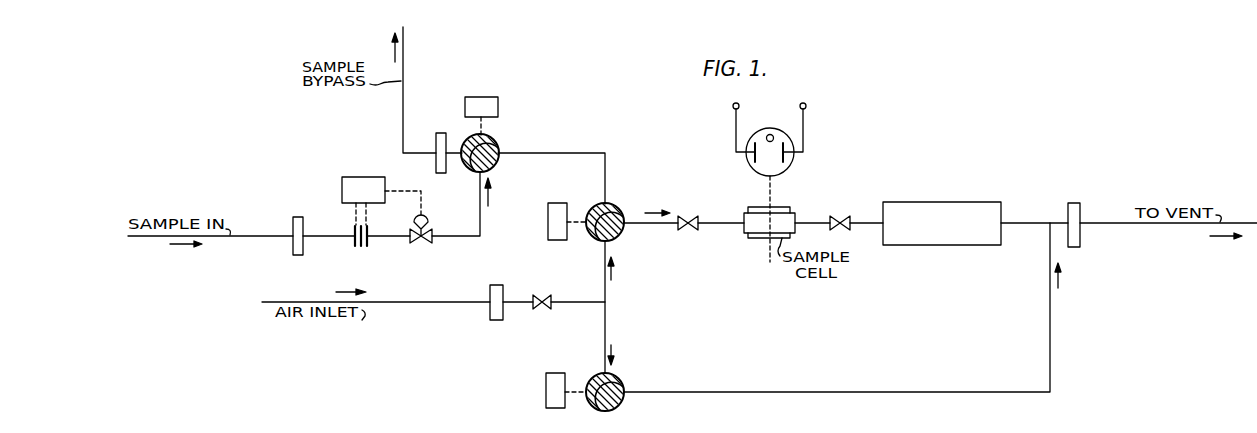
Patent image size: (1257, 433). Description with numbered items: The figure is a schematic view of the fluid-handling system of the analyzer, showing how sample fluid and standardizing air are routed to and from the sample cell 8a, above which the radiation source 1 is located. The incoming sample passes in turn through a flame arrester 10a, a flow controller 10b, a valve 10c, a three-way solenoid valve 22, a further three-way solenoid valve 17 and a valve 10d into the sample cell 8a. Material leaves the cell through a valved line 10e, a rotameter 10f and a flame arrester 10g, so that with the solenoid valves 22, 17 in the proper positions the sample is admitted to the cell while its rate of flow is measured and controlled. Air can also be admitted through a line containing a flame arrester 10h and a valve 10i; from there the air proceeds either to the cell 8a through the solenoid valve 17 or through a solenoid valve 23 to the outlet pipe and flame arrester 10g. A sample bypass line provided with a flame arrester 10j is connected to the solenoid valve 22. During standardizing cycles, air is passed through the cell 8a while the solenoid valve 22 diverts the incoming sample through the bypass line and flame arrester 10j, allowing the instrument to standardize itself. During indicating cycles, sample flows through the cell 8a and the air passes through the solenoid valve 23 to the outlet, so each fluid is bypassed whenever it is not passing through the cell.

The radiation source 1 is at (785, 165).
The sample cell 8a is at (755, 234).
The flame arrester 10a is at (295, 250).
The flow controller 10b is at (342, 191).
The valve 10c is at (422, 244).
The valve 10d is at (690, 217).
The valved line 10e is at (808, 218).
The rotameter 10f is at (939, 245).
The flame arrester 10g is at (1075, 203).
The flame arrester 10h is at (494, 320).
The valve 10i is at (543, 310).
The flame arrester 10j is at (434, 167).
The three-way solenoid valve 17 is at (618, 238).
The three-way solenoid valve 22 is at (496, 144).
The solenoid valve 23 is at (620, 383).